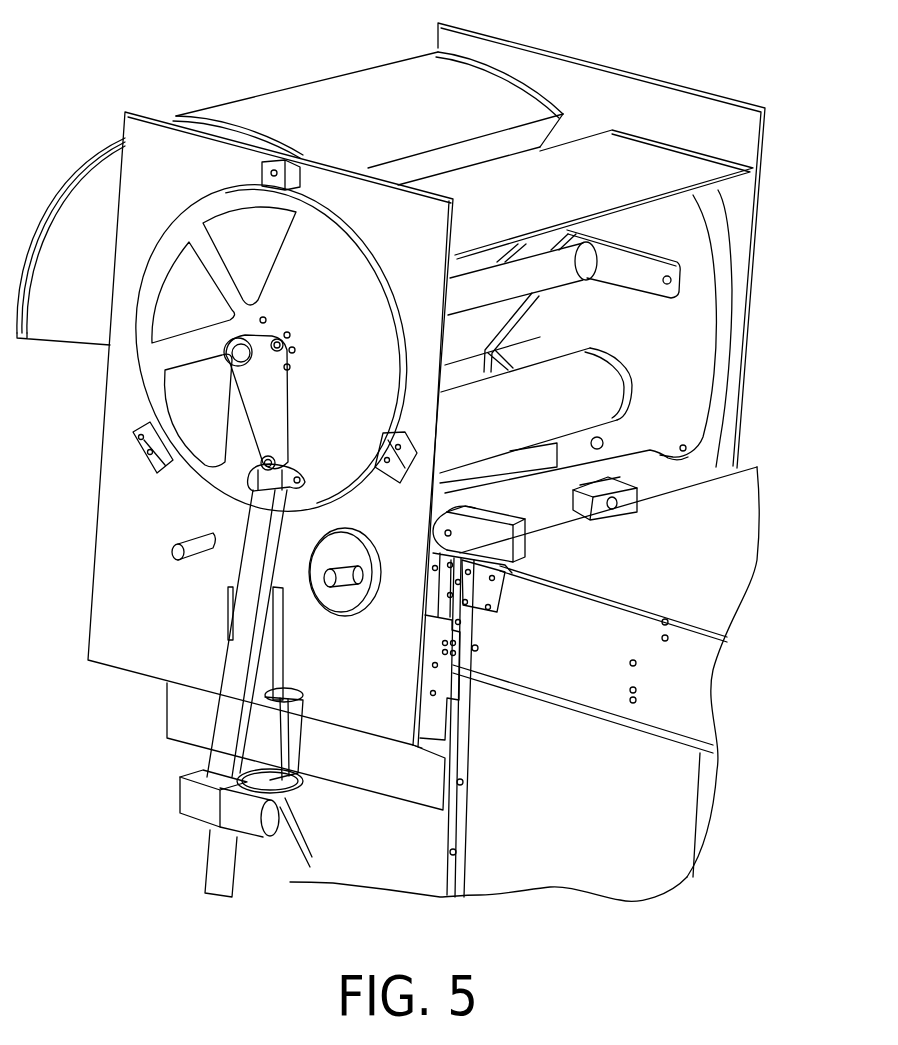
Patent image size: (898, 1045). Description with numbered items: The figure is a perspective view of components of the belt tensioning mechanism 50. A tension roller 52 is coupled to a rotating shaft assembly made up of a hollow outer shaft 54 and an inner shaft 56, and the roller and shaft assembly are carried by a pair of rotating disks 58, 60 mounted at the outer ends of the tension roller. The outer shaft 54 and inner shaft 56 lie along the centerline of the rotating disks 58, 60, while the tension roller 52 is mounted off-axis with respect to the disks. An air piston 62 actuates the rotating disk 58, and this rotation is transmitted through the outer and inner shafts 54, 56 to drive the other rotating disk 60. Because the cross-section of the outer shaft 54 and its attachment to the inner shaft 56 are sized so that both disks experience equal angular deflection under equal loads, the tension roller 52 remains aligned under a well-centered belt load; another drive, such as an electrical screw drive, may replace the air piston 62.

The tensioning mechanism 50 is at (781, 147).
The tension roller 52 is at (597, 390).
The hollow outer shaft 54 is at (582, 261).
The inner shaft 56 is at (237, 367).
The rotating disk 58 is at (325, 242).
The rotating disk 60 is at (676, 320).
The air piston 62 is at (240, 657).